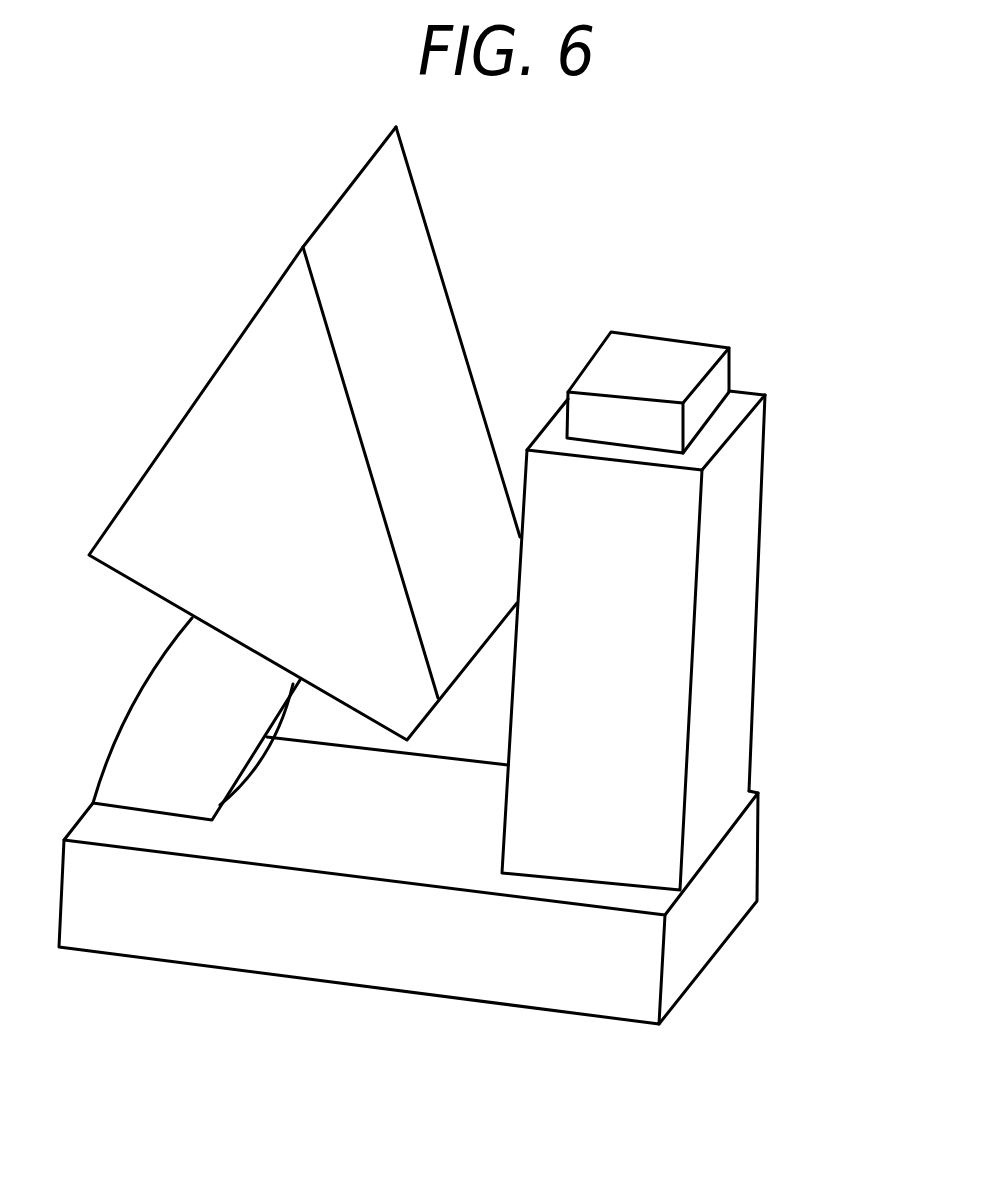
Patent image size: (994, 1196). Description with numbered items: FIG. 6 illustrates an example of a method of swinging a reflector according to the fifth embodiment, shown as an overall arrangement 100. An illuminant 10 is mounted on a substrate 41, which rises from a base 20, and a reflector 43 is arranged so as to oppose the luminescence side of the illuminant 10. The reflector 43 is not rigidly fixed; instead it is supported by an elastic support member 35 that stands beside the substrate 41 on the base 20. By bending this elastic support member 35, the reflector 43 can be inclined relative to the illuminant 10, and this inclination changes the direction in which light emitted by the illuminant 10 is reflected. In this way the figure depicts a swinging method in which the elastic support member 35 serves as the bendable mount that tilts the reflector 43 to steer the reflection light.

The optical device assembly 100 is at (714, 173).
The reflector 43 is at (437, 373).
The elastic support member 35 is at (158, 727).
The substrate 41 is at (657, 643).
The illuminant 10 is at (660, 358).
The base substrate 20 is at (758, 891).